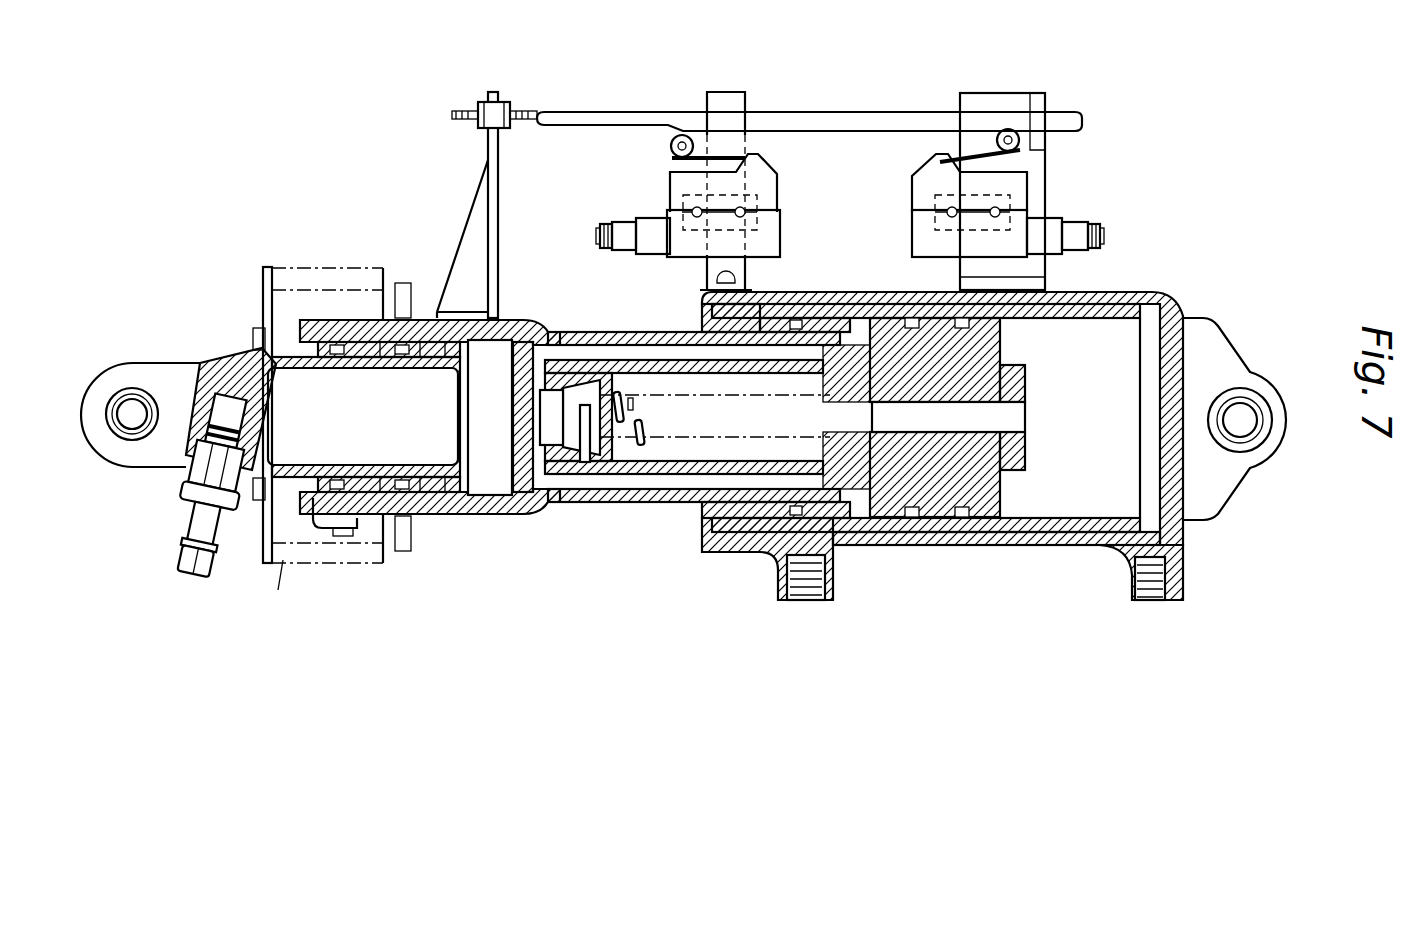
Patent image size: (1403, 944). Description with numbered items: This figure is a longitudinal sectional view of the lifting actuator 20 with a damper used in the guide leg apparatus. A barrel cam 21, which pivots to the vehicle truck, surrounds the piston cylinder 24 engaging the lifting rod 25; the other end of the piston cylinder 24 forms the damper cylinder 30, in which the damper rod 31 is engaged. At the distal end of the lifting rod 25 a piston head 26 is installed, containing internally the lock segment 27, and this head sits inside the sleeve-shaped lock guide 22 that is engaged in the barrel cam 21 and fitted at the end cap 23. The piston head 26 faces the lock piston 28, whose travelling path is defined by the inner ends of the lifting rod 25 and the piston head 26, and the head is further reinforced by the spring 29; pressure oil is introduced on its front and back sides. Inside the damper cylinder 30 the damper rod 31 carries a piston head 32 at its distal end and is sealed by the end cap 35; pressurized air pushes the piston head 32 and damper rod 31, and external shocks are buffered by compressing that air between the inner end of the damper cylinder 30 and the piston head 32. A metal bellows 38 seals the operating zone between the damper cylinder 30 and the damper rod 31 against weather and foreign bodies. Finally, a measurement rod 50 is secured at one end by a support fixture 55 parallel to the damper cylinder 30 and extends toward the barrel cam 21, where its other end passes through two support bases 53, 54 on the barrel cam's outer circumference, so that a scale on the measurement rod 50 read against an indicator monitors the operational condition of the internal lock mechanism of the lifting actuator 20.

The lifting actuator 20 is at (942, 470).
The barrel cam 21 is at (1160, 300).
The lock guide 22 is at (903, 546).
The end cap 23 is at (700, 520).
The piston cylinder 24 is at (503, 325).
The lifting rod 25 is at (648, 332).
The piston head 26 is at (990, 502).
The lock segment 27 is at (875, 510).
The lock piston 28 is at (670, 470).
The spring 29 is at (633, 442).
The damper cylinder 30 is at (502, 518).
The damper rod 31 is at (197, 372).
The piston head 32 is at (413, 320).
The end cap 35 is at (315, 505).
The metal bellows 38 is at (288, 448).
The measurement rod 50 is at (618, 112).
The support base 53 is at (1002, 98).
The support base 54 is at (740, 97).
The support fixture 55 is at (486, 148).